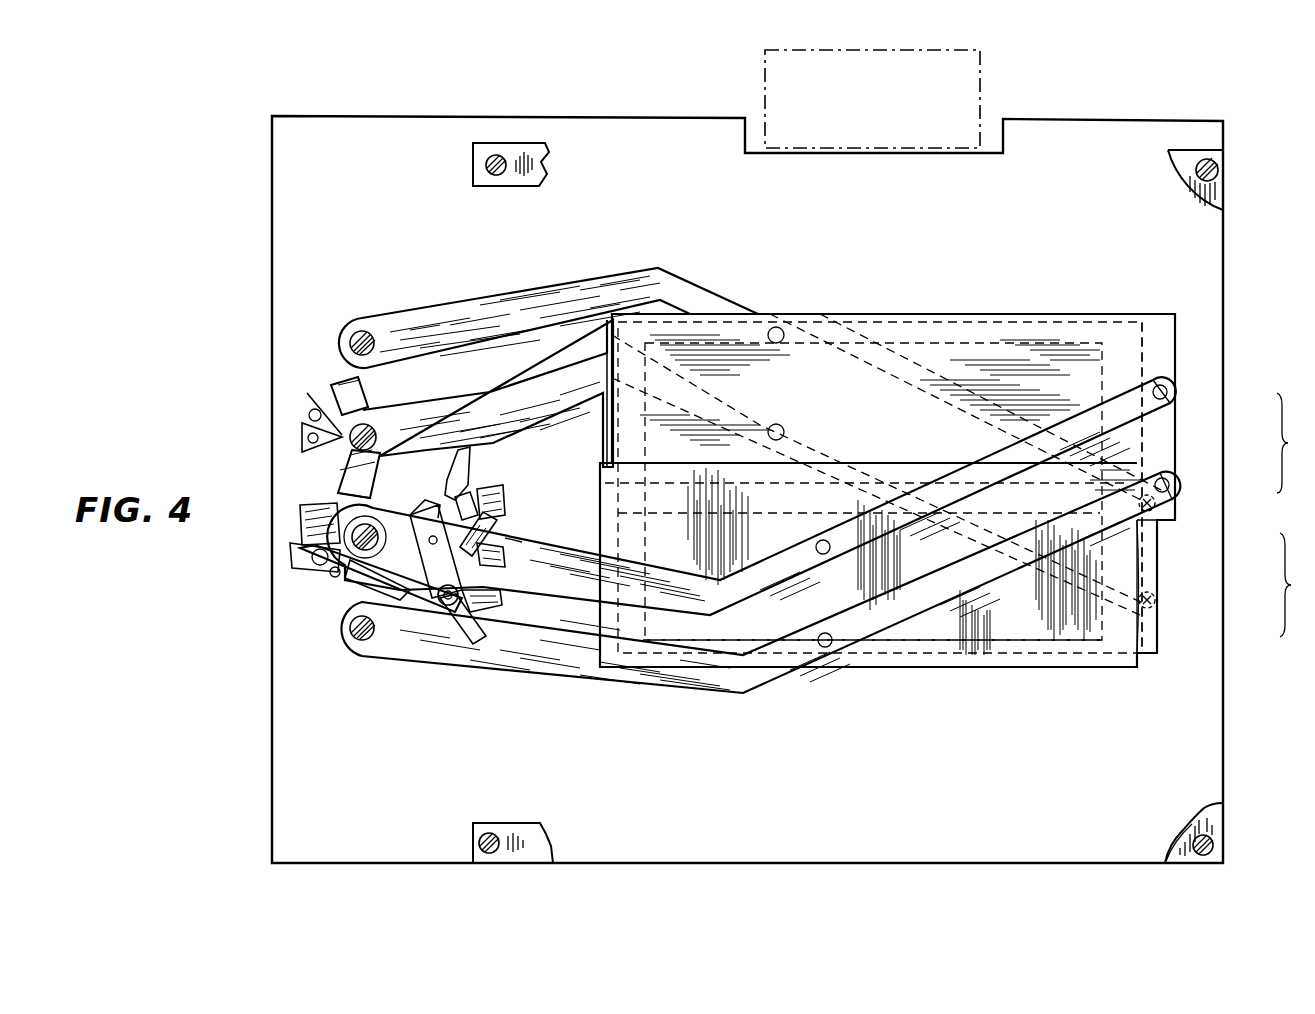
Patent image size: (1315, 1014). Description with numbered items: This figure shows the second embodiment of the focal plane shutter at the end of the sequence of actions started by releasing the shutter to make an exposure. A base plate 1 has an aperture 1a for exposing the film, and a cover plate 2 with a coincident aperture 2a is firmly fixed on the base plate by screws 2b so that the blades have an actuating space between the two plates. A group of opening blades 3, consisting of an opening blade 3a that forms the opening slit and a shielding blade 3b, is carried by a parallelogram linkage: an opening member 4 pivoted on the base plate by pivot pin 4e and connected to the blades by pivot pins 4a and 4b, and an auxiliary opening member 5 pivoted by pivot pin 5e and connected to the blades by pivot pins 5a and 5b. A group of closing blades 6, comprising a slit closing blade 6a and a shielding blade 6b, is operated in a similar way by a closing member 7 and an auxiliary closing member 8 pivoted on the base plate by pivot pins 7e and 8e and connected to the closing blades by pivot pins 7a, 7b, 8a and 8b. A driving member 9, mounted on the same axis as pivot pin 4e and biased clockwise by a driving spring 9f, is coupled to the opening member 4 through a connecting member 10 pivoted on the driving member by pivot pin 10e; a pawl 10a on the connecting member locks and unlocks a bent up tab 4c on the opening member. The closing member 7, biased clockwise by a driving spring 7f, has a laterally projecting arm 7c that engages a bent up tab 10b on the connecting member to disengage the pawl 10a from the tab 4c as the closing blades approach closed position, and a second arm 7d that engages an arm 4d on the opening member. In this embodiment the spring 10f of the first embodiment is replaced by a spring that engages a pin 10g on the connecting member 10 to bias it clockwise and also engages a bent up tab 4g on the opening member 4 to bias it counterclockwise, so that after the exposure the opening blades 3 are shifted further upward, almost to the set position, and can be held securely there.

The base plate 1 is at (1218, 720).
The mounting plate 1a is at (1068, 660).
The cover plate 2 is at (1202, 818).
The cover plate portion 2a is at (873, 491).
The fixing screws 2b is at (484, 164).
The link assembly 3 is at (1292, 443).
The upper link 3a is at (1170, 440).
The lower link 3b is at (1135, 476).
The upper connecting bar 4 is at (1087, 412).
The pivot pin 4a is at (1168, 392).
The hole 4b is at (828, 552).
The tab 4c is at (512, 500).
The tab 4d is at (310, 525).
The pivot 4e is at (368, 524).
The projection 4g is at (540, 548).
The lower connecting bar 5 is at (373, 660).
The pivot pin 5a is at (1168, 493).
The hole 5b is at (826, 632).
The pivot 5e is at (356, 640).
The guide assembly 6 is at (1295, 585).
The guide member 6a is at (1153, 567).
The guide member 6b is at (1148, 328).
The lower lever 7 is at (440, 405).
The pin 7a is at (1153, 608).
The hole 7b is at (776, 424).
The hook arm 7c is at (456, 465).
The arm 7d is at (347, 482).
The pivot 7e is at (378, 437).
The spring arm 7f is at (318, 400).
The upper lever 8 is at (405, 306).
The pin 8a is at (1152, 514).
The hole 8b is at (776, 327).
The pivot 8e is at (362, 330).
The lever 9 is at (403, 580).
The arm 9f is at (293, 560).
The latch lever 10 is at (438, 605).
The arm 10a is at (495, 520).
The hook arm 10b is at (440, 498).
The arm 10e is at (470, 646).
The tab 10f is at (516, 548).
The tab 10g is at (466, 496).